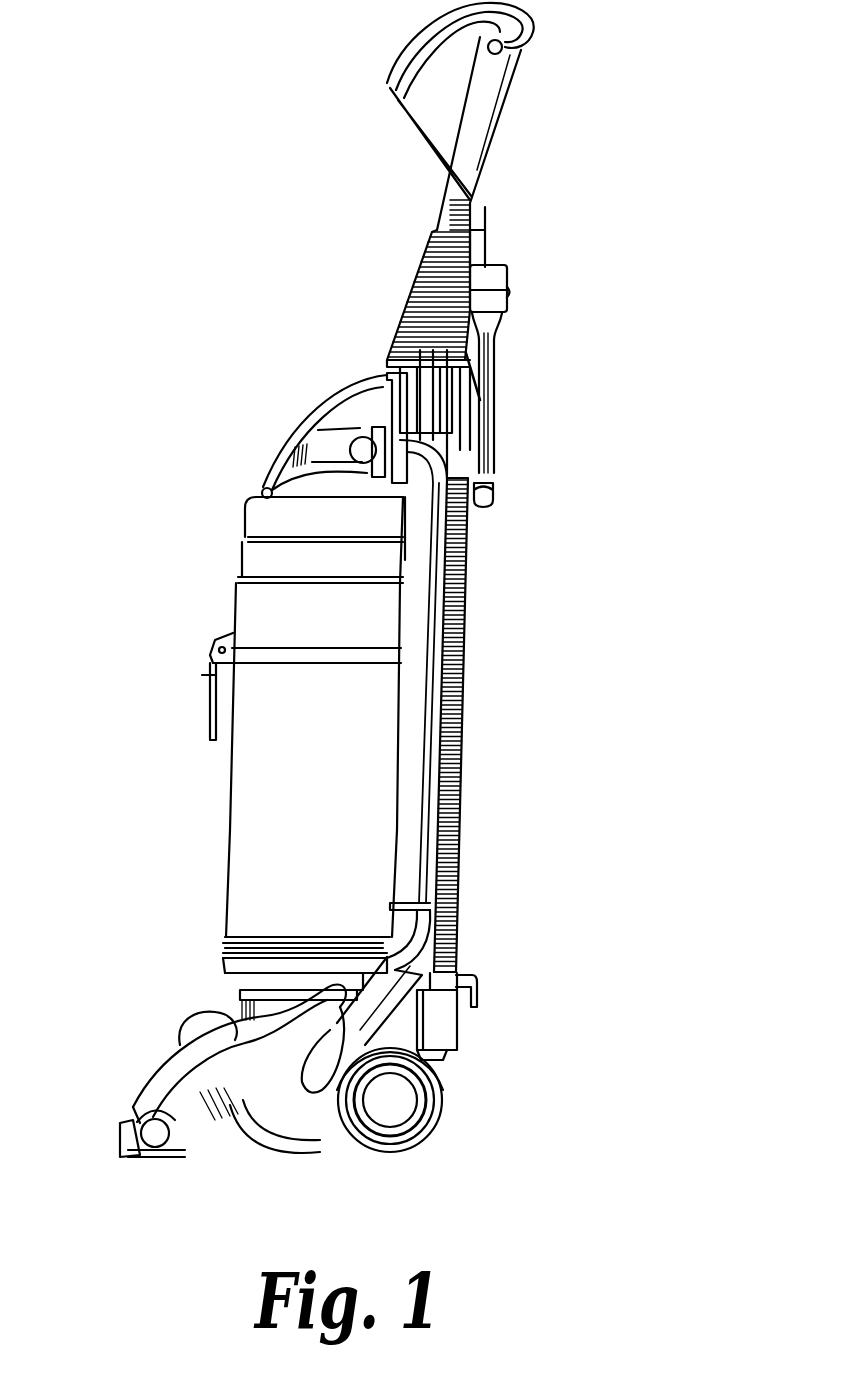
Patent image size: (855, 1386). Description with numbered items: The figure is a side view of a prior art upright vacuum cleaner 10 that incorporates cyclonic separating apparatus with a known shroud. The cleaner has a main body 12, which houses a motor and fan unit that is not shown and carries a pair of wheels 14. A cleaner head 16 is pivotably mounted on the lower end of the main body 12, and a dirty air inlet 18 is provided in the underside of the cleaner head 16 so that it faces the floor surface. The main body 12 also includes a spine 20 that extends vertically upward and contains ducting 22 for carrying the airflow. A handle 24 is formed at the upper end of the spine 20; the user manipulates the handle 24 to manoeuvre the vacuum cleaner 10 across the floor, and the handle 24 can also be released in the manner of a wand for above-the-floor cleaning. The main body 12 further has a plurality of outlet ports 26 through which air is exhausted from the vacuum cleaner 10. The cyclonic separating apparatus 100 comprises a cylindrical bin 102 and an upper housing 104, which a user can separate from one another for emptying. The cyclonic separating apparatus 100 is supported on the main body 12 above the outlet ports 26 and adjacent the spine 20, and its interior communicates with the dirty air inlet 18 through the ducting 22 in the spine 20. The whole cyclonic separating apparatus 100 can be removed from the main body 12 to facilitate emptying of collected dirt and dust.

The upright vacuum cleaner 10 is at (222, 418).
The main body 12 is at (465, 608).
The wheels 14 is at (443, 1098).
The cleaner head 16 is at (183, 1071).
The dirty air inlet 18 is at (155, 1153).
The spine 20 is at (412, 715).
The ducting 22 is at (415, 845).
The handle 24 is at (478, 112).
The outlet ports 26 is at (232, 962).
The cyclonic separating apparatus 100 is at (212, 802).
The cylindrical bin 102 is at (240, 866).
The upper housing 104 is at (255, 556).